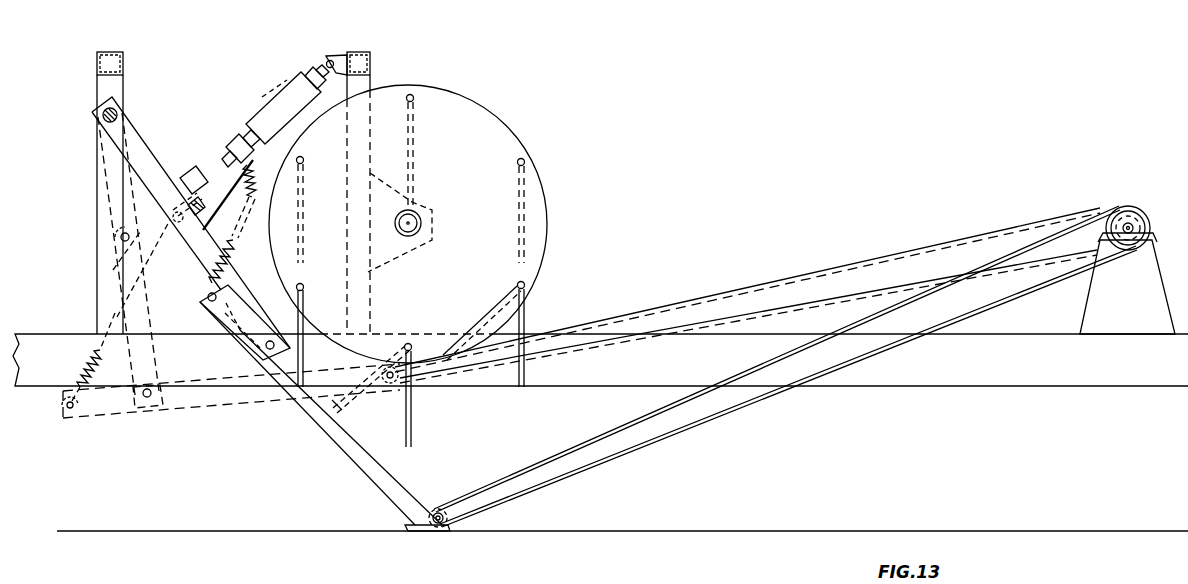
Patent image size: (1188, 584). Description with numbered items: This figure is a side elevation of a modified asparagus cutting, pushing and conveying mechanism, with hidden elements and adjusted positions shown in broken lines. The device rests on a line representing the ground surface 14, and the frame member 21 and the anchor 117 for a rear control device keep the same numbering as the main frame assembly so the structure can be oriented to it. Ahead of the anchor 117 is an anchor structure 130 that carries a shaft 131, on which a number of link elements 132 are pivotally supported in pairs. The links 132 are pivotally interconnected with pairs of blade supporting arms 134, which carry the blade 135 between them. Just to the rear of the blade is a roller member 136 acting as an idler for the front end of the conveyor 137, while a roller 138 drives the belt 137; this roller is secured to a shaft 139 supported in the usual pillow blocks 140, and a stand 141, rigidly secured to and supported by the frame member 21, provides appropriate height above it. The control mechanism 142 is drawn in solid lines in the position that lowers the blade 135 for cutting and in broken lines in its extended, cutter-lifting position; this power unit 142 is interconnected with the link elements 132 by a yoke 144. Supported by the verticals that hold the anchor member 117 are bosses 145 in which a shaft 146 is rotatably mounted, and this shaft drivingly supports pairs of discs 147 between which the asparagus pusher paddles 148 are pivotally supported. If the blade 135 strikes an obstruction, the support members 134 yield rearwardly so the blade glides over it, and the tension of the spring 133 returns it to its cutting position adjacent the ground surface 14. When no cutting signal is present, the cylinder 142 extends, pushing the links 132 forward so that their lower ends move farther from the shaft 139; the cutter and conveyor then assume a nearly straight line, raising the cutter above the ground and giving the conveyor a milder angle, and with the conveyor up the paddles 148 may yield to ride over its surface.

The ground surface 14 is at (513, 529).
The frame member 21 is at (955, 374).
The anchor 117 is at (372, 62).
The anchor structure 130 is at (123, 63).
The shaft 131 is at (100, 122).
The link element 132 is at (145, 150).
The spring 133 is at (231, 243).
The blade supporting arm 134 is at (362, 462).
The blade 135 is at (412, 528).
The roller member 136 is at (452, 508).
The conveyor 137 is at (638, 400).
The roller 138 is at (1140, 207).
The shaft 139 is at (1132, 235).
The pillow block 140 is at (1108, 232).
The stand 141 is at (1093, 303).
The control mechanism 142 is at (298, 92).
The yoke 144 is at (228, 163).
The boss 145 is at (433, 210).
The shaft 146 is at (412, 237).
The disc 147 is at (540, 207).
The pusher paddle 148 is at (487, 308).